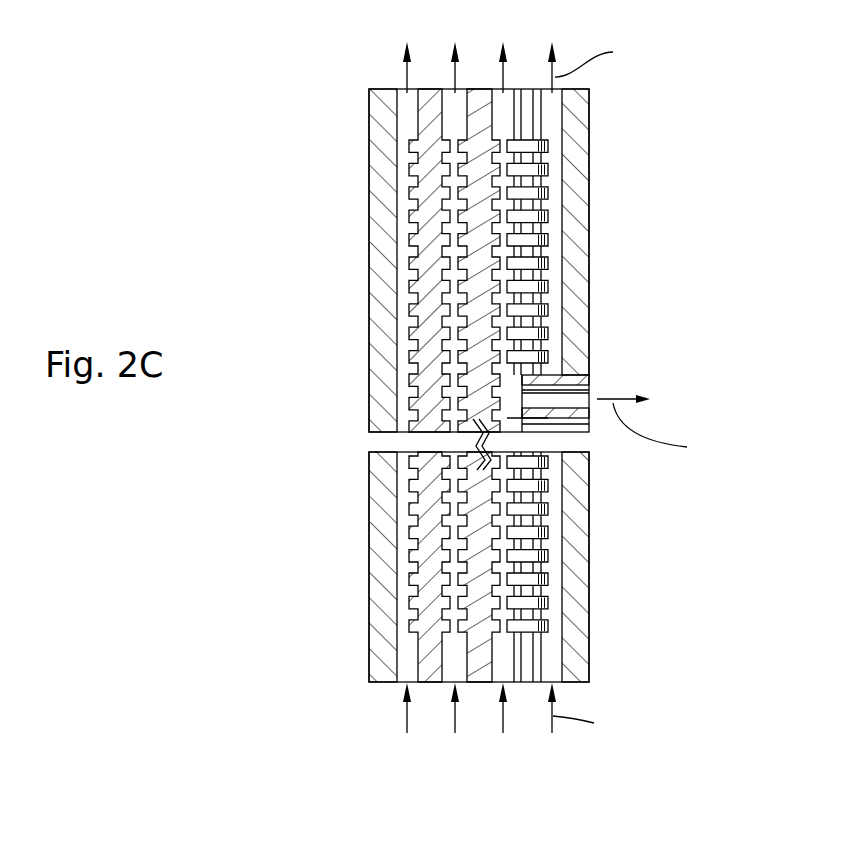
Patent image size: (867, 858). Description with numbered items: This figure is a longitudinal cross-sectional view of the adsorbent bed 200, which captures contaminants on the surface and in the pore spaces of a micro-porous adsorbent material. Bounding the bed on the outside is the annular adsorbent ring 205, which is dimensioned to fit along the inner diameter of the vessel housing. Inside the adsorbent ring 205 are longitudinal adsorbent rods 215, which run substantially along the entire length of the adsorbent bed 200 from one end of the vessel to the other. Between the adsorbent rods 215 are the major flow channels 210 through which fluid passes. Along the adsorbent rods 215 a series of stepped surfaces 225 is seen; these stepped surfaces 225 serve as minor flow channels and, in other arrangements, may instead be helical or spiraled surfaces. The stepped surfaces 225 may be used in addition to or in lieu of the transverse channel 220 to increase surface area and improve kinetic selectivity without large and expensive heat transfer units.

The adsorbent bed 200 is at (266, 158).
The adsorbent ring 205 is at (590, 203).
The flow channels 210 is at (503, 119).
The adsorbent rods 215 is at (428, 219).
The transverse channel 220 is at (568, 380).
The stepped surfaces 225 is at (412, 302).